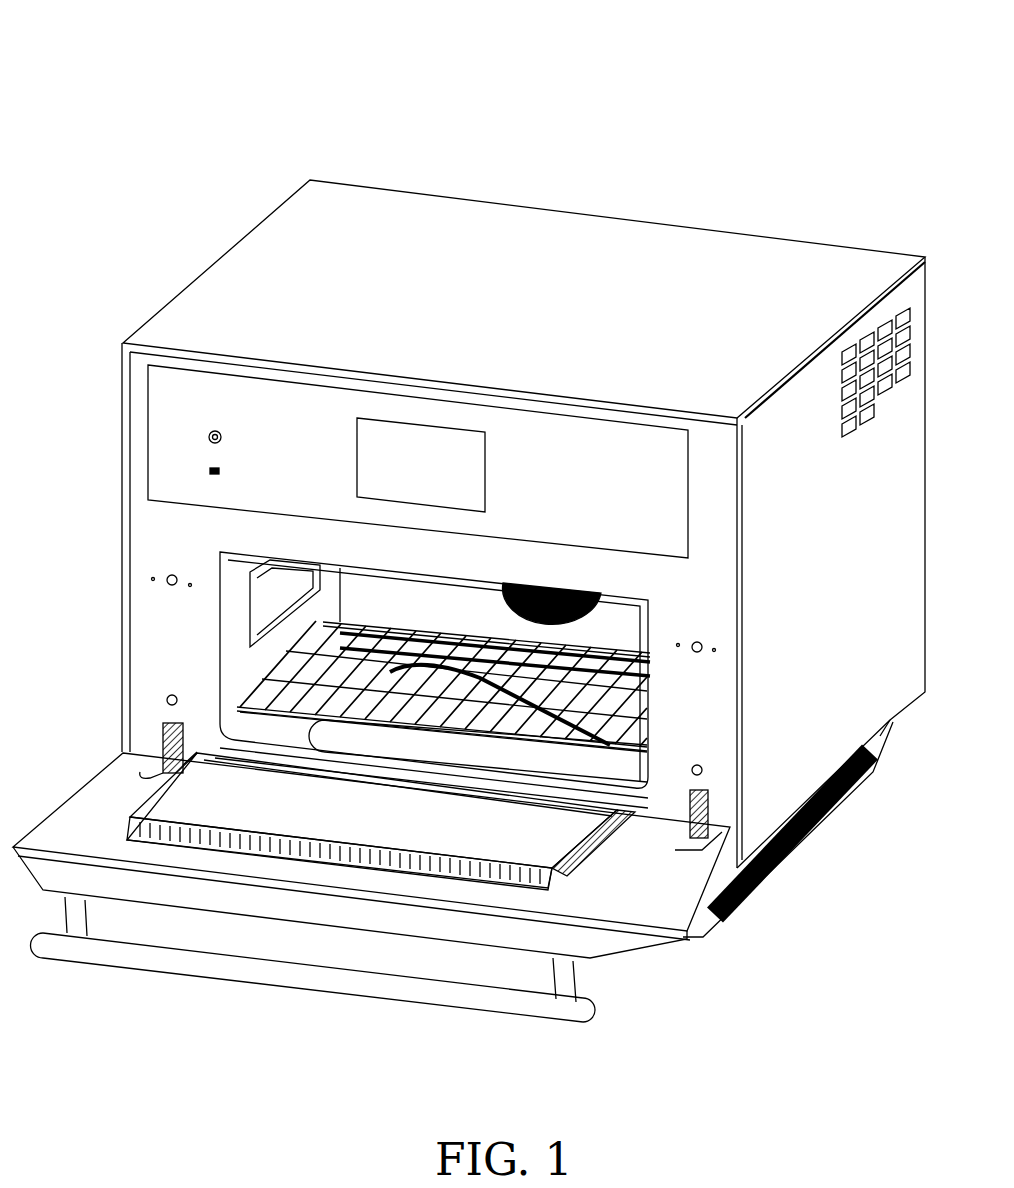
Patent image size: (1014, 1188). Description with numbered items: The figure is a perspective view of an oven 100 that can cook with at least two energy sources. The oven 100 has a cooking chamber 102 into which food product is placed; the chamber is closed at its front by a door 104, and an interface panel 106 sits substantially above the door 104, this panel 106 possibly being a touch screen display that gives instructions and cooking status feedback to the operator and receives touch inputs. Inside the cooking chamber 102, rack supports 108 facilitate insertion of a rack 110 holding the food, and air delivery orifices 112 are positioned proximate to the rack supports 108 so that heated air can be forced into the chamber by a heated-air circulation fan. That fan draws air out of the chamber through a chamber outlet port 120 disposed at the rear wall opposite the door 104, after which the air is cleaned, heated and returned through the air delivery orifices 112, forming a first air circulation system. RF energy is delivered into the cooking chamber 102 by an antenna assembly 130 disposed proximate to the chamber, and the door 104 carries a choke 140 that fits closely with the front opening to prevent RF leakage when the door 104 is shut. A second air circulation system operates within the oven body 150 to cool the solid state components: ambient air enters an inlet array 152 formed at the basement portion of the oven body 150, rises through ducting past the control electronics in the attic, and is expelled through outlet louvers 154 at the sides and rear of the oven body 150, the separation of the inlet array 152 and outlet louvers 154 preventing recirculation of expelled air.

The oven 100 is at (205, 95).
The cooking chamber 102 is at (240, 660).
The door 104 is at (140, 895).
The interface panel 106 is at (447, 439).
The rack supports 108 is at (247, 709).
The rack 110 is at (597, 745).
The air delivery orifices 112 is at (622, 653).
The chamber outlet port 120 is at (558, 590).
The antenna assembly 130 is at (265, 583).
The choke 140 is at (530, 870).
The oven body 150 is at (195, 343).
The inlet array 152 is at (773, 870).
The outlet louvers 154 is at (884, 352).